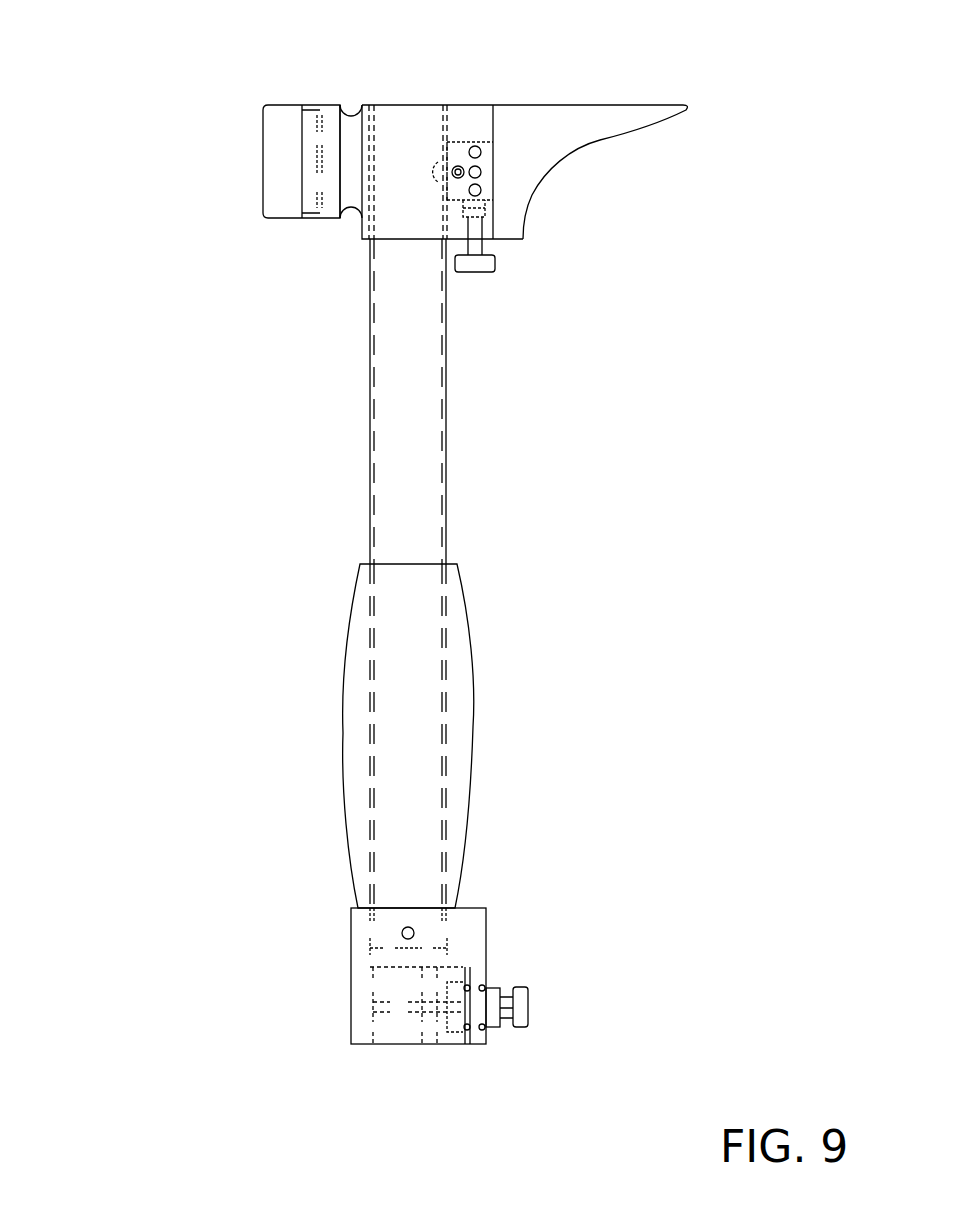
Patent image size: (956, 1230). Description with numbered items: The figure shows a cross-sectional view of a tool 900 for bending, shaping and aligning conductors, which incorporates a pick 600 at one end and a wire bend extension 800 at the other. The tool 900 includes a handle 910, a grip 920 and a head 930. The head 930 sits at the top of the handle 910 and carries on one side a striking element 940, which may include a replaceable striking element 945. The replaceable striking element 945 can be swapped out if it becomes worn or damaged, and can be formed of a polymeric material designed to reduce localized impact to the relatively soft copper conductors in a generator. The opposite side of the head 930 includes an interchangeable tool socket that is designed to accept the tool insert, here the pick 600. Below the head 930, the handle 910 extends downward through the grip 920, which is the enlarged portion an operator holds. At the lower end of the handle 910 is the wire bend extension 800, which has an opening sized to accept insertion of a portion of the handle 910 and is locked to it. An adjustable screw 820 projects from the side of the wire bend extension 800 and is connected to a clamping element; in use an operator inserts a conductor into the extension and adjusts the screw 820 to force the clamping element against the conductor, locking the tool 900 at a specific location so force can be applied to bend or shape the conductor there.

The tool 900 is at (80, 72).
The striking element 940 is at (321, 106).
The replaceable striking element 945 is at (267, 157).
The head 930 is at (397, 112).
The pick 600 is at (603, 112).
The handle 910 is at (447, 438).
The grip 920 is at (472, 725).
The wire bend extension 800 is at (317, 980).
The adjustable screw 820 is at (520, 1008).